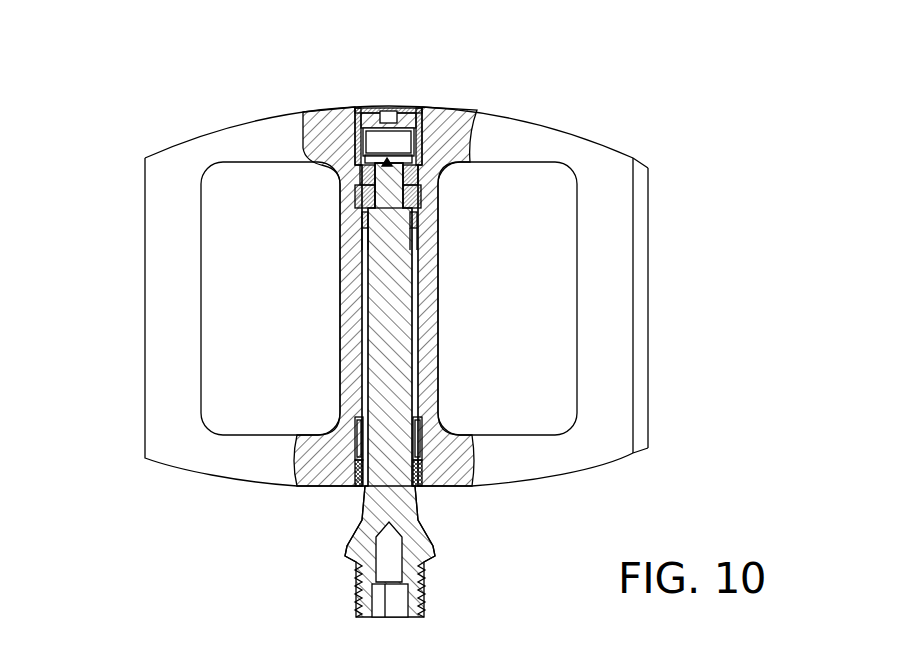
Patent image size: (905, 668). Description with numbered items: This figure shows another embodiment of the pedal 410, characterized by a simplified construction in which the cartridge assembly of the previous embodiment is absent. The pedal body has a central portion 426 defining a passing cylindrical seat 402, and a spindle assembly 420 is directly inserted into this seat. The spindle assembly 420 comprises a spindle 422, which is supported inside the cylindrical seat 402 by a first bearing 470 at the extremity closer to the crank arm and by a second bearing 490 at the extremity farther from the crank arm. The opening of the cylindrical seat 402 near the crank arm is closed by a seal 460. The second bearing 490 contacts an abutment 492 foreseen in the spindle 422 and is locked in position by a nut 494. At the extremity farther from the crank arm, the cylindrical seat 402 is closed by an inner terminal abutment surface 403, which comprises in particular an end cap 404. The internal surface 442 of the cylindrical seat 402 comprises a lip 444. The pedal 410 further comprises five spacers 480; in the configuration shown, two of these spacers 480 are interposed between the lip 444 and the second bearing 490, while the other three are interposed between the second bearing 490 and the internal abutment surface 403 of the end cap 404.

The cylindrical seat 402 is at (373, 261).
The inner terminal abutment surface 403 is at (392, 160).
The end cap 404 is at (380, 108).
The pedal 410 is at (652, 131).
The spindle assembly 420 is at (414, 239).
The spindle 422 is at (397, 508).
The central portion 426 is at (430, 342).
The internal surface 442 is at (412, 281).
The lip 444 is at (362, 232).
The seal 460 is at (363, 493).
The first bearing 470 is at (355, 462).
The spacers 480 is at (352, 204).
The second bearing 490 is at (340, 206).
The abutment 492 is at (410, 200).
The nut 494 is at (347, 155).